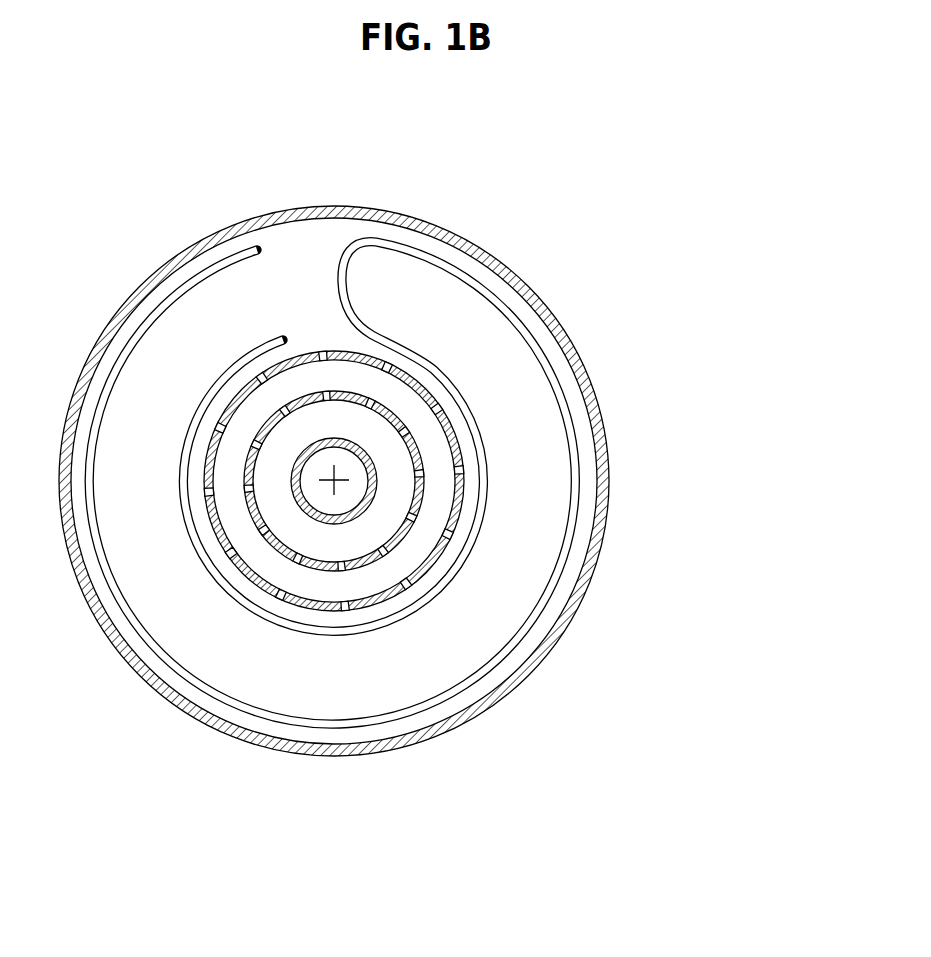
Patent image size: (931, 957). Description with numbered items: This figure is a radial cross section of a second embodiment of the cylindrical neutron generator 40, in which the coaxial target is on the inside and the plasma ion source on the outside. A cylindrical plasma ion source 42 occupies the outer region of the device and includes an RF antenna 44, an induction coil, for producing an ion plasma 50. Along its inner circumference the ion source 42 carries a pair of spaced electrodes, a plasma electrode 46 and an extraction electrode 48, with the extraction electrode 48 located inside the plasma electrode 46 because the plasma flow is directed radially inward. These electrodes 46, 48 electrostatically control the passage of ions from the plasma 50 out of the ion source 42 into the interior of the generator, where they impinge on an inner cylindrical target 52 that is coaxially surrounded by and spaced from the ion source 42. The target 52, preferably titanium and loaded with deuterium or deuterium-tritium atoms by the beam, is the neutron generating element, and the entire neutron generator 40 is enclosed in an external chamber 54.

The neutron generator 40 is at (486, 218).
The cylindrical plasma ion source 42 is at (276, 299).
The RF antenna 44 is at (490, 672).
The plasma electrode 46 is at (425, 390).
The extraction electrode 48 is at (418, 448).
The ion plasma 50 is at (327, 690).
The inner cylindrical target 52 is at (376, 483).
The external chamber 54 is at (575, 609).